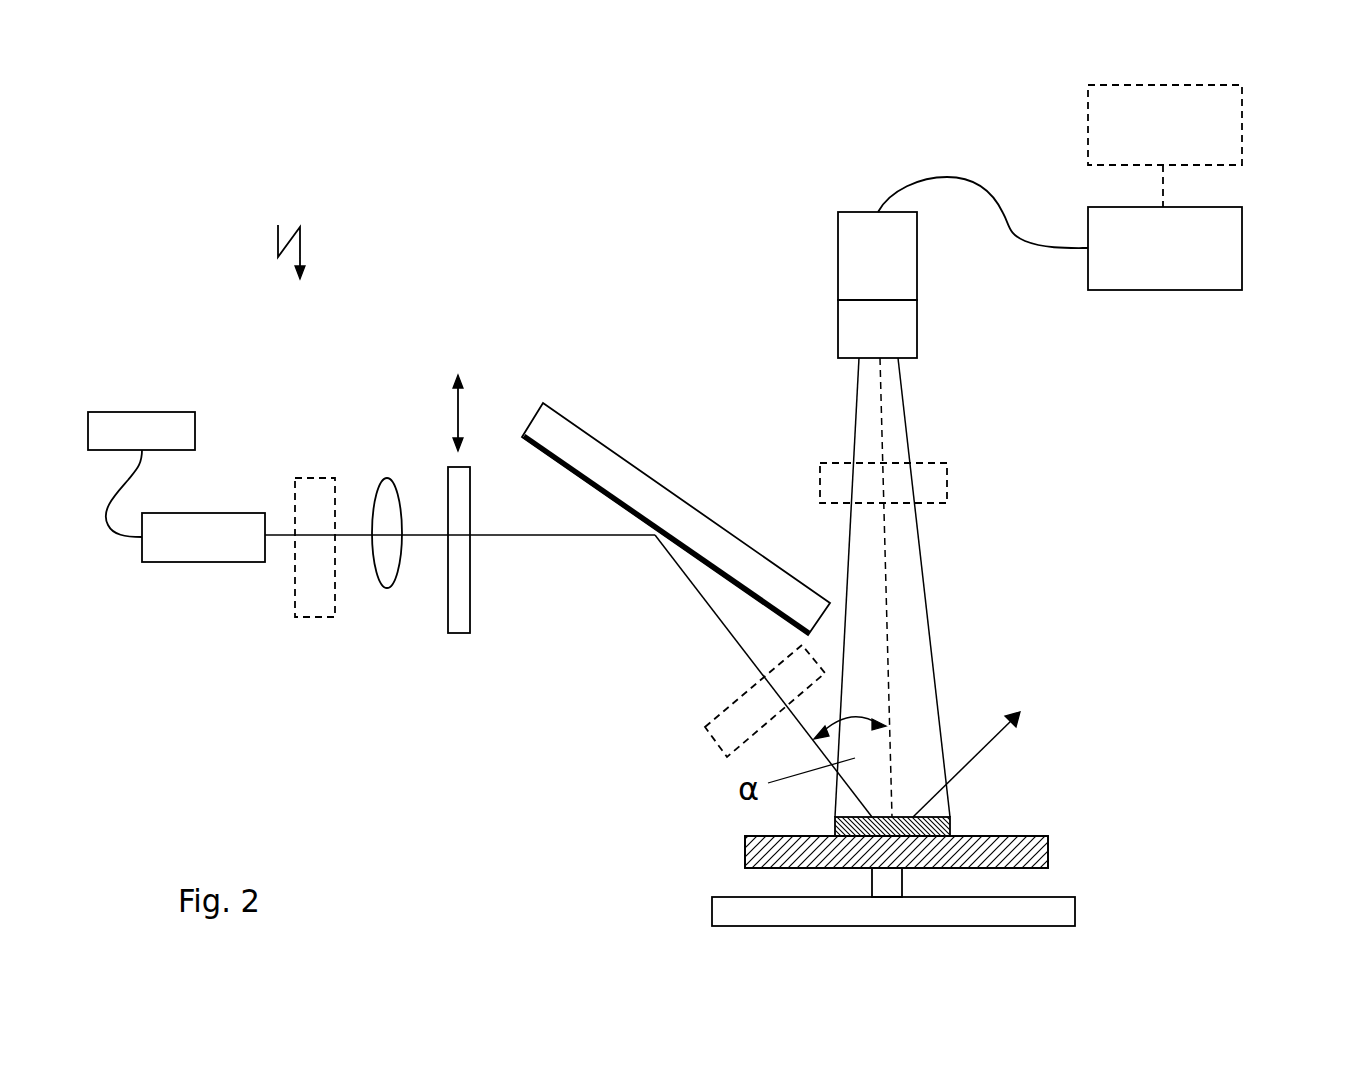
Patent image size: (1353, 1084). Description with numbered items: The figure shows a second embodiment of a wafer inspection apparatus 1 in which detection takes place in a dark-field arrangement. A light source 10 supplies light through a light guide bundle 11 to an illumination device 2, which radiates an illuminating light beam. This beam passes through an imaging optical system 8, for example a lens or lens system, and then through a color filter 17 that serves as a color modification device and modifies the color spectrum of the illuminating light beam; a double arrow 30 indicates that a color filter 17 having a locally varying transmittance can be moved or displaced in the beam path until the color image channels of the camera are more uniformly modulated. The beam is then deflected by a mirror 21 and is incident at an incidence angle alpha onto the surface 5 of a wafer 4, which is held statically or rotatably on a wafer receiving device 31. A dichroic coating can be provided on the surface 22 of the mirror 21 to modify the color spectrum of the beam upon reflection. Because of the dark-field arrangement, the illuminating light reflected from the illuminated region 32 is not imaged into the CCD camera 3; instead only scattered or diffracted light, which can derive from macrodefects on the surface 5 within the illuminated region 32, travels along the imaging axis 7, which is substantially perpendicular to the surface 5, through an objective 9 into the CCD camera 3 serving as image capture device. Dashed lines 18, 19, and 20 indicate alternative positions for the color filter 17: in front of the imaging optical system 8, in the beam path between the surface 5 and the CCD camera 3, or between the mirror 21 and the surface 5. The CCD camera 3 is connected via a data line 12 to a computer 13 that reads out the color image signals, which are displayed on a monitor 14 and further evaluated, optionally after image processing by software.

The wafer inspection apparatus 1 is at (274, 242).
The illumination device 2 is at (197, 548).
The CCD camera 3 is at (903, 257).
The wafer 4 is at (1042, 850).
The surface 5 is at (745, 848).
The imaging axis 7 is at (897, 613).
The imaging optical system 8 is at (382, 487).
The objective 9 is at (903, 335).
The light source 10 is at (153, 423).
The light guide bundle 11 is at (138, 478).
The data line 12 is at (960, 177).
The computer 13 is at (1227, 250).
The monitor 14 is at (1227, 118).
The color filter 17 is at (458, 615).
The dashed-line position of color filter 18 is at (317, 487).
The dashed-line position of color filter 19 is at (940, 485).
The dashed-line position of color filter 20 is at (720, 727).
The mirror 21 is at (668, 500).
The surface of mirror 22 is at (548, 457).
The double arrow 30 is at (469, 408).
The wafer receiving device 31 is at (1058, 910).
The illuminated region 32 is at (955, 823).